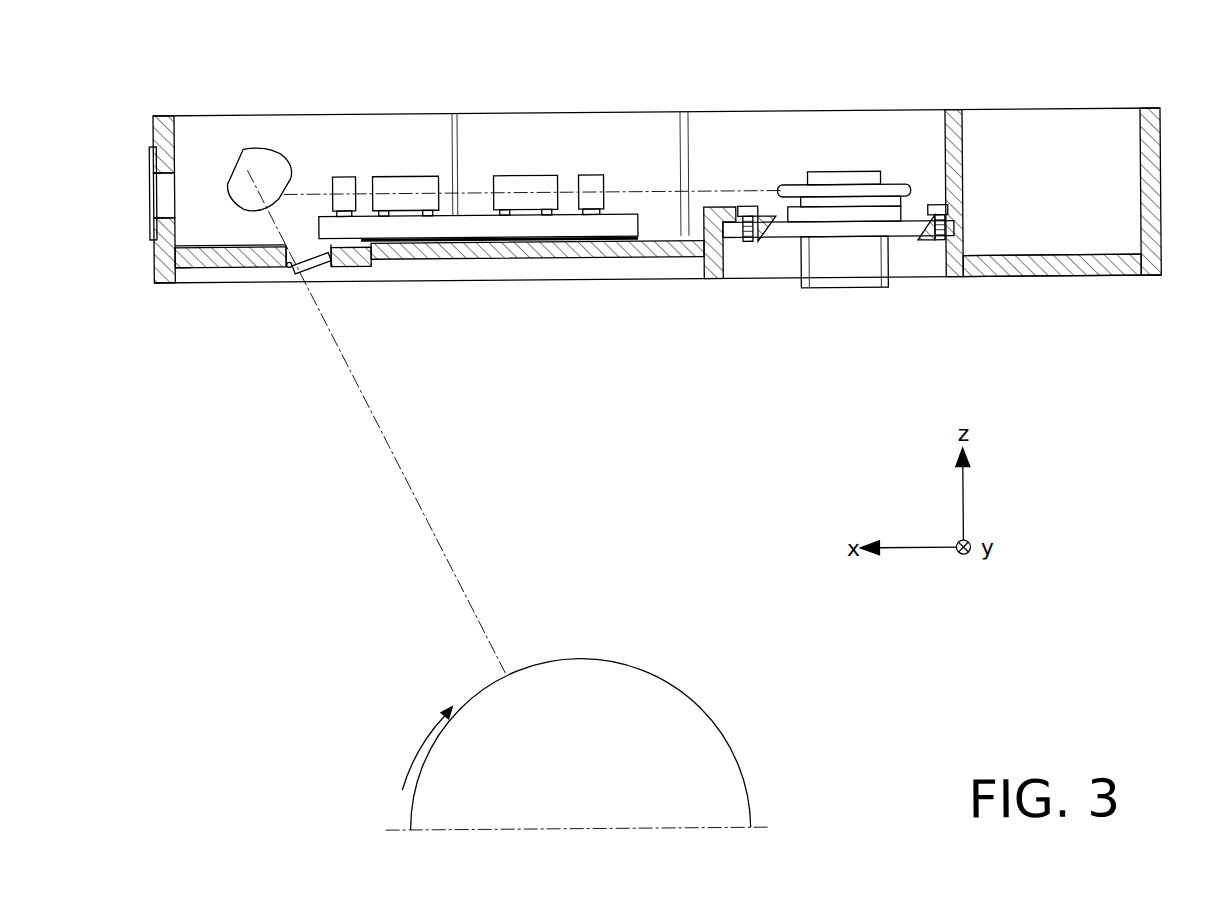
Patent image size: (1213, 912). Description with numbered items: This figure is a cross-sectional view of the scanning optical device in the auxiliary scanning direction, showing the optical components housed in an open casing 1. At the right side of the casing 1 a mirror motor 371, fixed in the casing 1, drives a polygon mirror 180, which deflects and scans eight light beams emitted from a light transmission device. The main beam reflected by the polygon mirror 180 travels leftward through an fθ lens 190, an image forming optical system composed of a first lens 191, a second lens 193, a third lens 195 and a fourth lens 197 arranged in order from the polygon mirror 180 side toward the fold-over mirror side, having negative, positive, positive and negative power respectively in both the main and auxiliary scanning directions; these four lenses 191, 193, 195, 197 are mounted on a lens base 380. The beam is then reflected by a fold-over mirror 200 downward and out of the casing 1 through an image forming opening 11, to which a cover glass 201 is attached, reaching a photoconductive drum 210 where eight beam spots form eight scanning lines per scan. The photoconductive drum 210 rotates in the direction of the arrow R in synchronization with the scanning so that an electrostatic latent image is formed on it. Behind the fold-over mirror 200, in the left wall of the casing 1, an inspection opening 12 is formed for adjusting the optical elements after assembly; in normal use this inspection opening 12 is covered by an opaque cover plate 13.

The casing 1 is at (1160, 214).
The image forming opening 11 is at (292, 273).
The inspection opening 12 is at (156, 181).
The opaque cover plate 13 is at (157, 219).
The polygon mirror 180 is at (855, 190).
The fθ lens 190 is at (471, 112).
The first lens 191 is at (575, 140).
The second lens 193 is at (522, 178).
The third lens 195 is at (405, 178).
The fourth lens 197 is at (344, 178).
The fold-over mirror 200 is at (265, 148).
The cover glass 201 is at (313, 282).
The photoconductive drum 210 is at (683, 702).
The mirror motor 371 is at (846, 280).
The lens base 380 is at (512, 232).